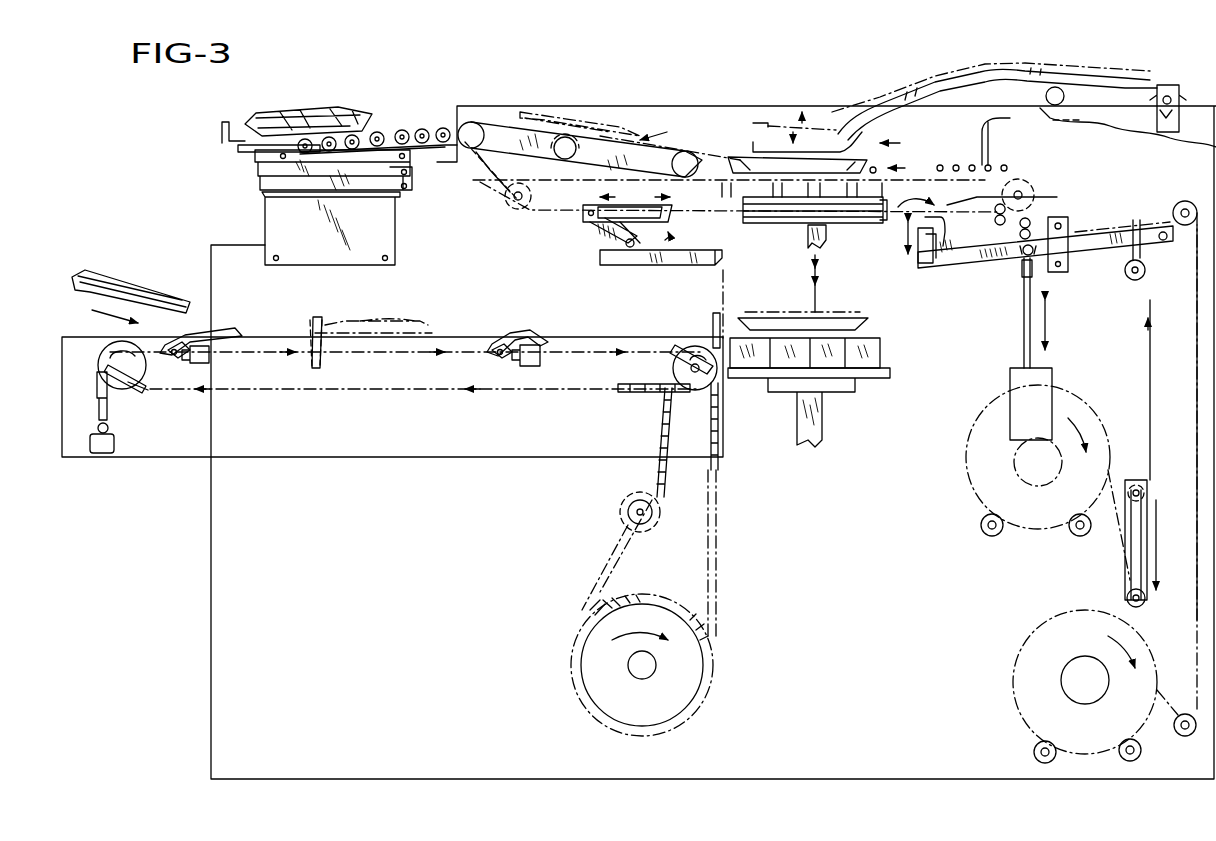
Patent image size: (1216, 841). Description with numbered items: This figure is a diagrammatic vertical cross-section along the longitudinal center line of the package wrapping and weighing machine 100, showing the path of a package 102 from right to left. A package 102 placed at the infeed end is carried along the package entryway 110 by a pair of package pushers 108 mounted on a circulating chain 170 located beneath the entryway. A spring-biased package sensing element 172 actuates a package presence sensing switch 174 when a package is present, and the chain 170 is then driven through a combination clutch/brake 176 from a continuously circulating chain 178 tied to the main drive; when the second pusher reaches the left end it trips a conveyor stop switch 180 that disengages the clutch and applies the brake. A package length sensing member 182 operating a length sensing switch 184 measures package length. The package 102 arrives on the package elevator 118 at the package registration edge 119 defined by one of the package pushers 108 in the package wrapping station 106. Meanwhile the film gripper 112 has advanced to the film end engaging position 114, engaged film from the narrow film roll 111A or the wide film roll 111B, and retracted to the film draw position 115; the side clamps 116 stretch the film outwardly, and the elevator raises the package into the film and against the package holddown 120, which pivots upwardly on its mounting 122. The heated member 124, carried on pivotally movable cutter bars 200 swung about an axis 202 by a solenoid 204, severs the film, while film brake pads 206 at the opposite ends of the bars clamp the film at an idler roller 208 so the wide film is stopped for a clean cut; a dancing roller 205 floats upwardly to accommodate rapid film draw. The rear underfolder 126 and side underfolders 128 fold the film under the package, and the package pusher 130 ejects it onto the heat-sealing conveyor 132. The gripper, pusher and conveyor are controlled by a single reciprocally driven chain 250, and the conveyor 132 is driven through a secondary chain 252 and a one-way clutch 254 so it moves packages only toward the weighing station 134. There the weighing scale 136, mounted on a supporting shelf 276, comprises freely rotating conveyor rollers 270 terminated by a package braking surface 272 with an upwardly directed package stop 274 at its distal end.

The package wrapping and weighing machine 100 is at (408, 601).
The package 102 is at (78, 280).
The package wrapping station 106 is at (862, 296).
The package pushers 108 is at (122, 398).
The package entryway 110 is at (584, 322).
The narrow film roll 111A is at (1020, 645).
The wide film roll 111B is at (966, 428).
The film gripper 112 is at (590, 210).
The film end engaging position 114 is at (912, 225).
The film draw position 115 is at (668, 255).
The side clamps 116 is at (840, 225).
The package elevator 118 is at (872, 378).
The package registration edge 119 is at (727, 275).
The package holddown 120 is at (792, 112).
The mounting 122 is at (1167, 95).
The heated member 124 is at (930, 258).
The rear underfolder 126 is at (1003, 160).
The side underfolders 128 is at (760, 210).
The package pusher 130 is at (996, 120).
The heat-sealing conveyor 132 is at (504, 136).
The weighing station 134 is at (290, 102).
The weighing scale 136 is at (255, 162).
The circulating chain 170 is at (635, 395).
The package sensing element 172 is at (218, 330).
The package presence sensing switch 174 is at (210, 362).
The combination clutch/brake 176 is at (690, 356).
The continuously circulating chain 178 is at (625, 568).
The conveyor stop switch 180 is at (144, 397).
The package length sensing member 182 is at (520, 332).
The length sensing switch 184 is at (540, 362).
The cutter bars 200 is at (1000, 258).
The axis 202 is at (1058, 220).
The solenoid 204 is at (1046, 374).
The dancing roller 205 is at (1126, 598).
The film brake pads 206 is at (1155, 255).
The idler roller 208 is at (1125, 270).
The chain 250 is at (530, 210).
The secondary chain 252 is at (505, 180).
The one-way clutch 254 is at (482, 158).
The conveyor rollers 270 is at (392, 130).
The package braking surface 272 is at (240, 150).
The package stop 274 is at (222, 124).
The supporting shelf 276 is at (320, 248).